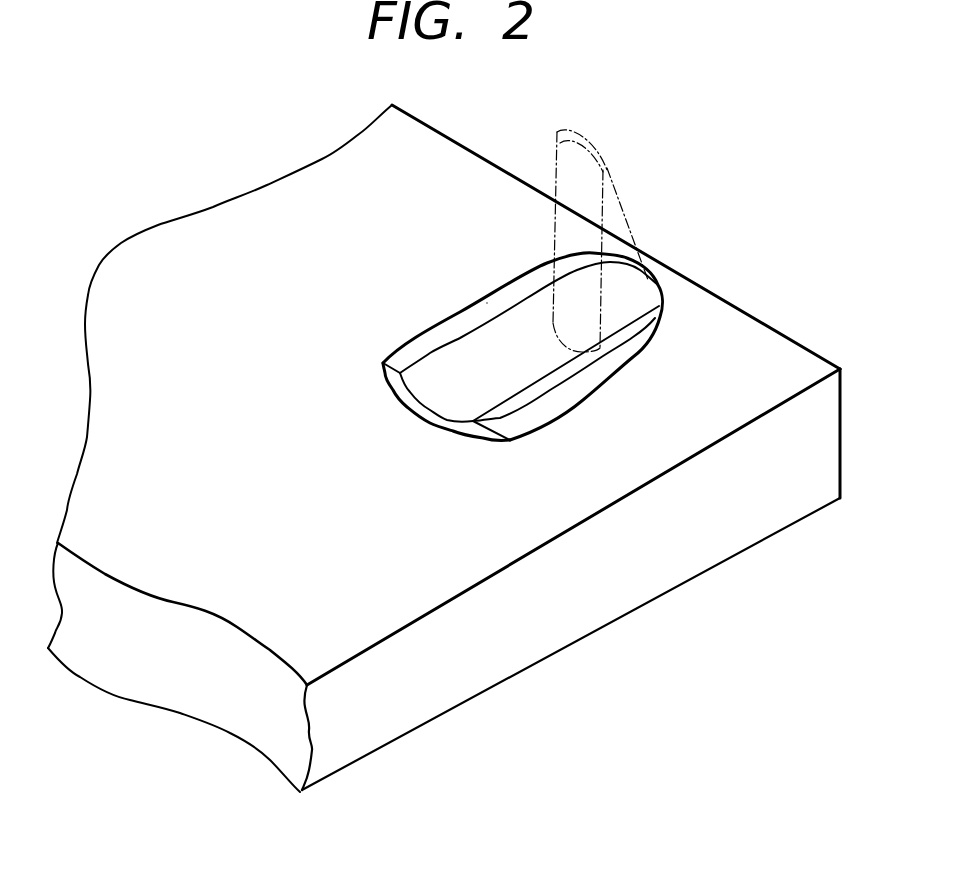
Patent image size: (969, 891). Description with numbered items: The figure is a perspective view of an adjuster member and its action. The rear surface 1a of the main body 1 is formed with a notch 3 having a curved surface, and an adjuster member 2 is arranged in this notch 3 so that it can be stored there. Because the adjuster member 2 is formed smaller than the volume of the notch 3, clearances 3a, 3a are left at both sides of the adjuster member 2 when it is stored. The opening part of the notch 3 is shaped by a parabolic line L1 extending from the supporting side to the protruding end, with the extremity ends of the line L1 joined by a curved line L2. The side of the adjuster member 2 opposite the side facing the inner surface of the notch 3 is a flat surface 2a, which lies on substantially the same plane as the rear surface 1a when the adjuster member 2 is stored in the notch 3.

The main body 1 is at (638, 583).
The rear surface 1a is at (450, 173).
The adjuster member 2 is at (415, 340).
The flat surface 2a is at (443, 403).
The notch 3 is at (432, 352).
The clearance 3a is at (487, 303).
The parabolic line L1 is at (658, 327).
The curved line L2 is at (405, 402).